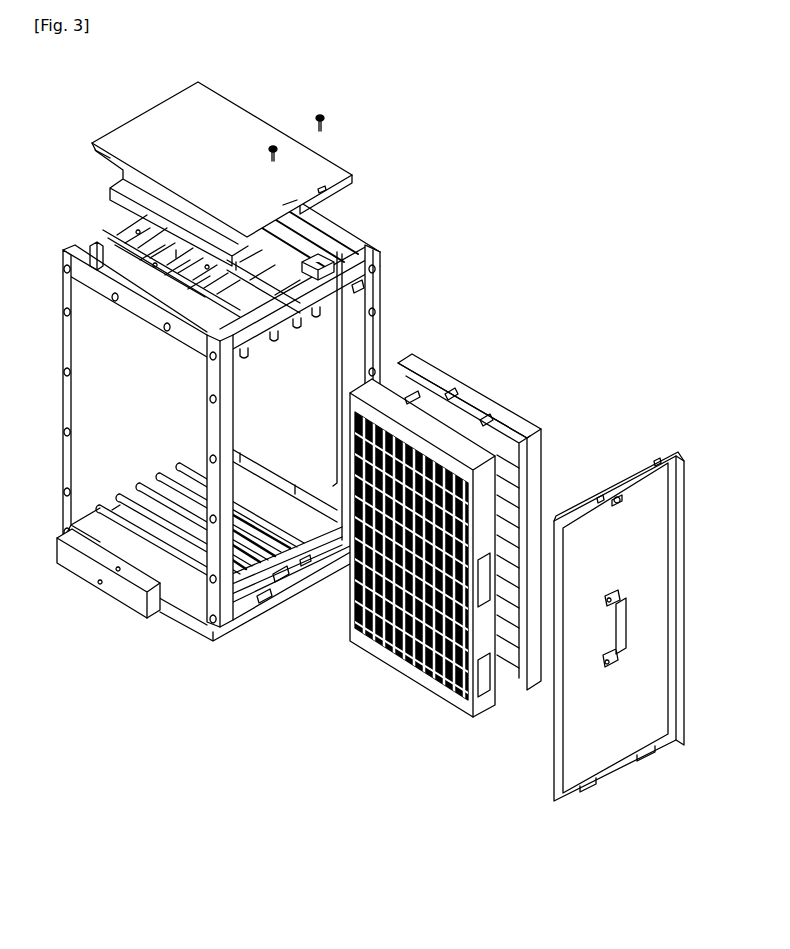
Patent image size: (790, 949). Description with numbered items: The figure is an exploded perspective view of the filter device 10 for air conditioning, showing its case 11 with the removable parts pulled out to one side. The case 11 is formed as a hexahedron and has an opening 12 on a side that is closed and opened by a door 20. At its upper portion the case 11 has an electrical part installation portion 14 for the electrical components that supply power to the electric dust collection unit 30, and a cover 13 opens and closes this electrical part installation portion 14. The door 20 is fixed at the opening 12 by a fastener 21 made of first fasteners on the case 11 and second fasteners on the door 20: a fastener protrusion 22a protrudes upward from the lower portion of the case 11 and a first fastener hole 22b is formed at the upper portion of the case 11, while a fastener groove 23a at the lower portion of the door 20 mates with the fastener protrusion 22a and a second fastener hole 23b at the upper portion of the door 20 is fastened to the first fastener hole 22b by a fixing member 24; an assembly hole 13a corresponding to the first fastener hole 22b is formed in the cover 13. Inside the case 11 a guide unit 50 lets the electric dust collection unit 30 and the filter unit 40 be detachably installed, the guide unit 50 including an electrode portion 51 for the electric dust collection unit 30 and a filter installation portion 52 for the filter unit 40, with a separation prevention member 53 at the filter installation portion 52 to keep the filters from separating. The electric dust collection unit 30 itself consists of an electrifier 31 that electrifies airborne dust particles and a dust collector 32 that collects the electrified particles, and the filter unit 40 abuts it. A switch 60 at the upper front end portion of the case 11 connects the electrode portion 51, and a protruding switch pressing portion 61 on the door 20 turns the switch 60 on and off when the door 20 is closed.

The filter device 10 is at (460, 180).
The case 11 is at (357, 250).
The opening 12 is at (296, 380).
The cover 13 is at (223, 125).
The assembly hole 13a is at (320, 190).
The electrical part installation portion 14 is at (137, 250).
The door 20 is at (638, 604).
The fastener 21 is at (612, 476).
The fastener protrusion 22a is at (259, 600).
The first fastener hole 22b is at (370, 292).
The fastener groove 23a is at (647, 757).
The second fastener hole 23b is at (618, 493).
The fixing member 24 is at (320, 114).
The electric dust collection unit 30 is at (420, 580).
The electrifier 31 is at (463, 712).
The dust collector 32 is at (493, 707).
The filter unit 40 is at (517, 413).
The guide unit 50 is at (173, 565).
The electrode portion 51 is at (273, 520).
The filter installation portion 52 is at (148, 502).
The separation prevention member 53 is at (281, 572).
The switch 60 is at (318, 260).
The switch pressing portion 61 is at (655, 460).